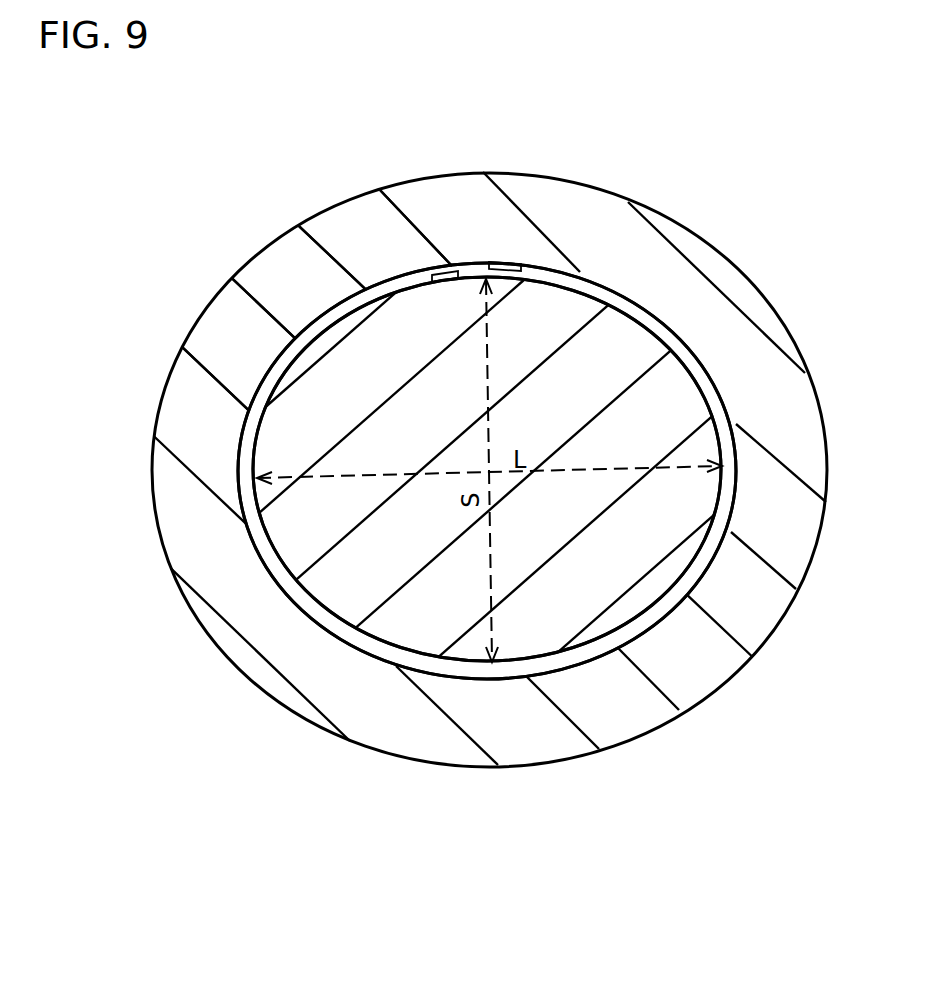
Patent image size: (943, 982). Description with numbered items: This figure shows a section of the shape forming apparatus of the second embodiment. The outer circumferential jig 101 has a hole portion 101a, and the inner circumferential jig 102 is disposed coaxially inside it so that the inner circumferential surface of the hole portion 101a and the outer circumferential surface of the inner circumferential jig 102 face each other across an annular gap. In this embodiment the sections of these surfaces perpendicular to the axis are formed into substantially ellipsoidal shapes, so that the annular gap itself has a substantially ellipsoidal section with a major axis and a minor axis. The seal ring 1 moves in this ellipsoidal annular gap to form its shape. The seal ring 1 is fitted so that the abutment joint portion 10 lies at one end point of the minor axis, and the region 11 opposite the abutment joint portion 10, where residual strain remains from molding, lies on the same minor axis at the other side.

The seal ring 1 is at (697, 365).
The abutment joint portion 10 is at (487, 253).
The region opposite to the abutment joint portion 11 is at (493, 662).
The outer circumferential jig 101 is at (327, 700).
The hole portion 101a is at (273, 565).
The inner circumferential jig 102 is at (350, 373).